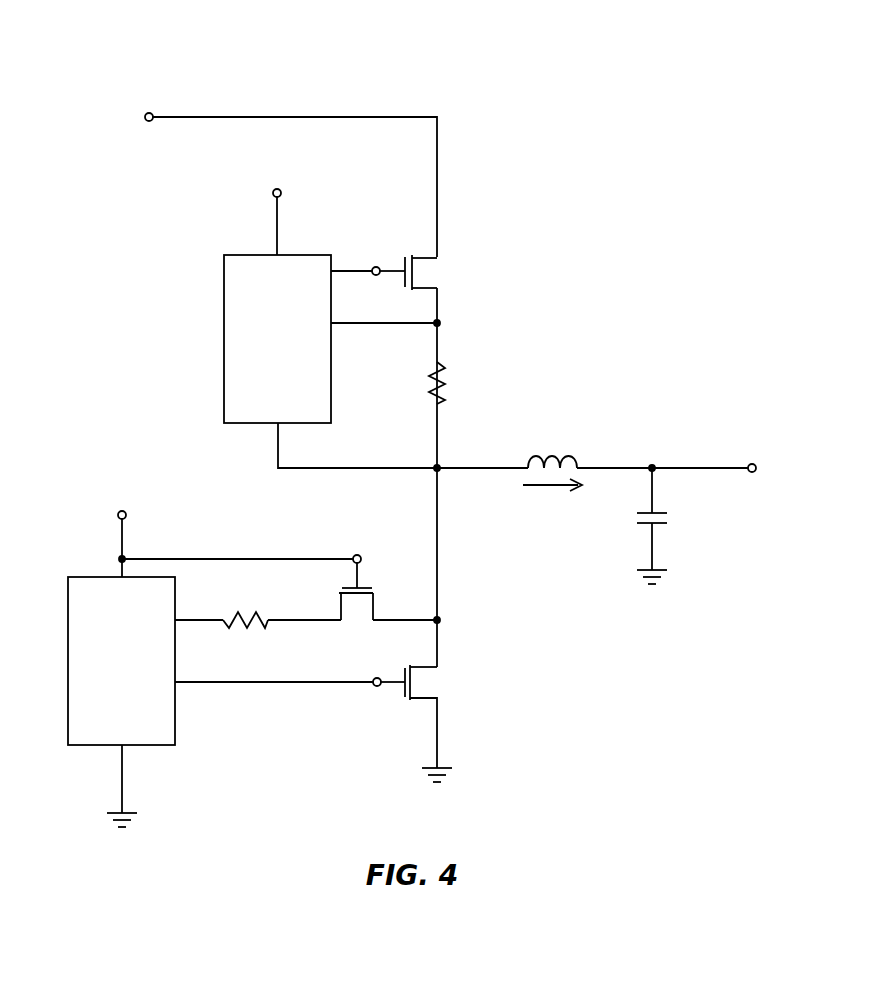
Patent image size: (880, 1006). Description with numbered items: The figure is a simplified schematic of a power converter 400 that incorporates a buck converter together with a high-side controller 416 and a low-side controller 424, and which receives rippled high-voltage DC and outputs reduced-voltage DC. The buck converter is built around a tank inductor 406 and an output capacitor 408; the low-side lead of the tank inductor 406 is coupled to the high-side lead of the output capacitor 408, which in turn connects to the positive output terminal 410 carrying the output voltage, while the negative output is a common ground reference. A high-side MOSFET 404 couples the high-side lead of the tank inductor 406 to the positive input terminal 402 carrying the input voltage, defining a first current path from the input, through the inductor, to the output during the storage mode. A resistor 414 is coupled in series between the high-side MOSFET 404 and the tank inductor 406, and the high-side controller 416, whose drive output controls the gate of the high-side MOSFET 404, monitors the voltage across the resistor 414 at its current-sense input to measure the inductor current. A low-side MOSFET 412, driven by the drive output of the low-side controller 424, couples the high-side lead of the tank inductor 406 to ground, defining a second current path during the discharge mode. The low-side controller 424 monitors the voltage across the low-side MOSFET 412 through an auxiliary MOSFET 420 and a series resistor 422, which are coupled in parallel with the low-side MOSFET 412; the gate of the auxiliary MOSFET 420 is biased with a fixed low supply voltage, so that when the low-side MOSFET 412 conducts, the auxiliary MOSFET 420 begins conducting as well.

The power converter 400 is at (664, 78).
The positive input terminal 402 is at (151, 124).
The high-side MOSFET 404 is at (412, 252).
The tank inductor 406 is at (544, 452).
The output capacitor 408 is at (660, 524).
The positive output terminal 410 is at (752, 462).
The low-side MOSFET 412 is at (418, 704).
The resistor 414 is at (441, 360).
The high-side controller 416 is at (224, 333).
The auxiliary MOSFET 420 is at (376, 602).
The series resistor 422 is at (238, 612).
The low-side controller 424 is at (68, 655).